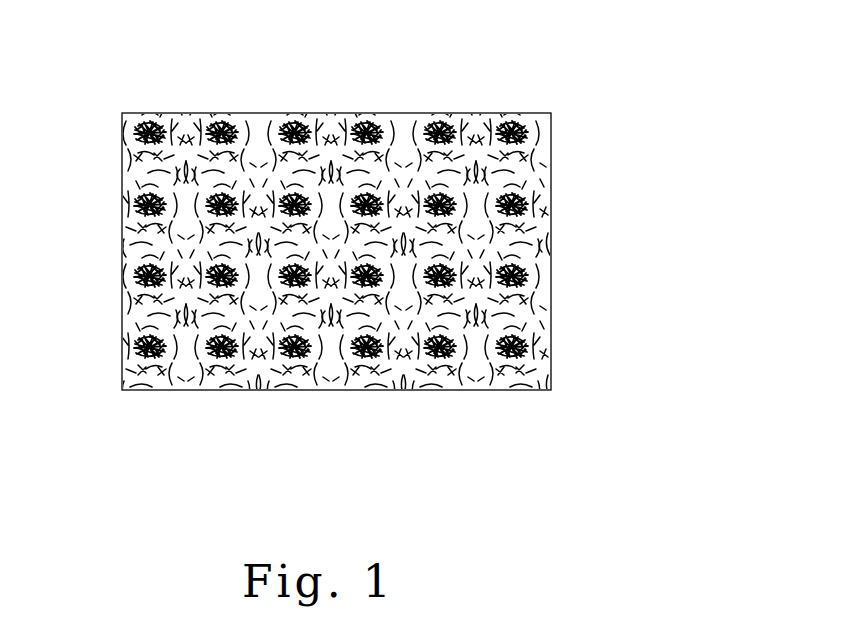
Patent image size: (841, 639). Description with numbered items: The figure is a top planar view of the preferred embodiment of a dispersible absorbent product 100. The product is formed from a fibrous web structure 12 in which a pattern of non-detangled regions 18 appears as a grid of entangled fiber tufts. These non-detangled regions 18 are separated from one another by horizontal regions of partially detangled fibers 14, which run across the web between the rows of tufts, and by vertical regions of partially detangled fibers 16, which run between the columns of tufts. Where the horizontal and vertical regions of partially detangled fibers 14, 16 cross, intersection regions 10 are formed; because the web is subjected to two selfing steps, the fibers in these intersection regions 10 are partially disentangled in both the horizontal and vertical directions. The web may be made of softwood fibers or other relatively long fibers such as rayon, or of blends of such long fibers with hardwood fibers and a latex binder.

The dispersible absorbent product 100 is at (363, 248).
The intersection regions 10 is at (480, 170).
The fibrous web structure 12 is at (540, 252).
The horizontal regions of partially detangled fibers 14 is at (150, 316).
The vertical regions of partially detangled fibers 16 is at (412, 372).
The non-detangled regions 18 is at (283, 127).